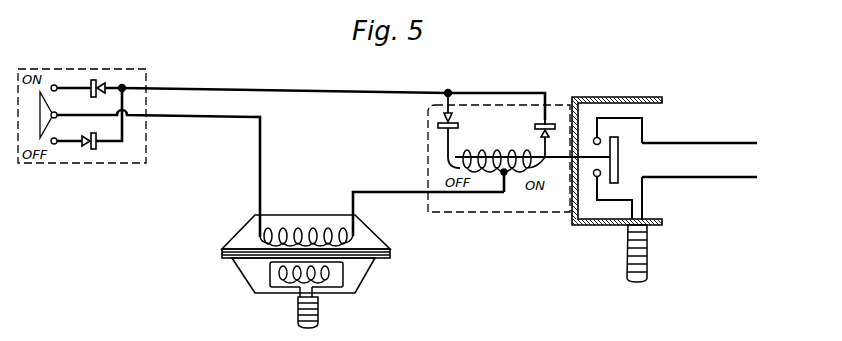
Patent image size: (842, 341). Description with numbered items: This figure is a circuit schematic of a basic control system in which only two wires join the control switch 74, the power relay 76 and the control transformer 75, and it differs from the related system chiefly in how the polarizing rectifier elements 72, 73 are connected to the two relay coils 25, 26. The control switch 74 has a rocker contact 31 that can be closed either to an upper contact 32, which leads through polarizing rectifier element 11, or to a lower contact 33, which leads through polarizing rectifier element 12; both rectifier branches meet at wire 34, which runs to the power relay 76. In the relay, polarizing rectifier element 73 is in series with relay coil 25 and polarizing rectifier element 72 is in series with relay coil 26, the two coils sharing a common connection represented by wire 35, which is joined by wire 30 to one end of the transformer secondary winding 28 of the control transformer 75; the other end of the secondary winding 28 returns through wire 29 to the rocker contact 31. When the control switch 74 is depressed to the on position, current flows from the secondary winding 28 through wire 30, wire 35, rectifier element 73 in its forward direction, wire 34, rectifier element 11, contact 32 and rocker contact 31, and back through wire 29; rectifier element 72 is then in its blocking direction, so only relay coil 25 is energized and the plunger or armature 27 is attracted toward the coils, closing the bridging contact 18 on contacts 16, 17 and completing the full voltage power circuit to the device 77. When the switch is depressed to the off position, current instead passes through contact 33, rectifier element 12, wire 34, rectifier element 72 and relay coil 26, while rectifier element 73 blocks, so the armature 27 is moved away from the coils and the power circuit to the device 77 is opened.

The polarizing rectifier element 11 is at (103, 80).
The polarizing rectifier element 12 is at (100, 150).
The contact 16 is at (572, 214).
The contact 17 is at (593, 139).
The bridging contact 18 is at (618, 143).
The relay coil 25 is at (514, 152).
The relay coil 26 is at (462, 150).
The plunger or armature 27 is at (562, 163).
The transformer secondary winding 28 is at (247, 234).
The wire 29 is at (262, 140).
The wire 30 is at (399, 182).
The rocker contact 31 is at (40, 124).
The contact 32 is at (58, 86).
The contact 33 is at (56, 146).
The wire 34 is at (296, 90).
The wire 35 is at (508, 182).
The polarizing rectifier element 72 is at (440, 117).
The polarizing rectifier element 73 is at (555, 123).
The control switch 74 is at (148, 75).
The control transformer 75 is at (308, 215).
The power relay 76 is at (446, 214).
The device 77 is at (703, 160).